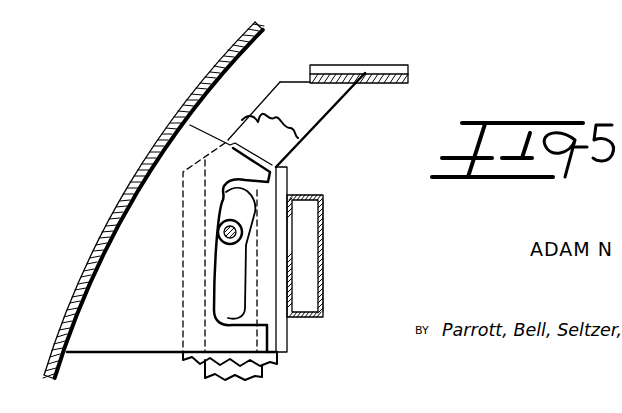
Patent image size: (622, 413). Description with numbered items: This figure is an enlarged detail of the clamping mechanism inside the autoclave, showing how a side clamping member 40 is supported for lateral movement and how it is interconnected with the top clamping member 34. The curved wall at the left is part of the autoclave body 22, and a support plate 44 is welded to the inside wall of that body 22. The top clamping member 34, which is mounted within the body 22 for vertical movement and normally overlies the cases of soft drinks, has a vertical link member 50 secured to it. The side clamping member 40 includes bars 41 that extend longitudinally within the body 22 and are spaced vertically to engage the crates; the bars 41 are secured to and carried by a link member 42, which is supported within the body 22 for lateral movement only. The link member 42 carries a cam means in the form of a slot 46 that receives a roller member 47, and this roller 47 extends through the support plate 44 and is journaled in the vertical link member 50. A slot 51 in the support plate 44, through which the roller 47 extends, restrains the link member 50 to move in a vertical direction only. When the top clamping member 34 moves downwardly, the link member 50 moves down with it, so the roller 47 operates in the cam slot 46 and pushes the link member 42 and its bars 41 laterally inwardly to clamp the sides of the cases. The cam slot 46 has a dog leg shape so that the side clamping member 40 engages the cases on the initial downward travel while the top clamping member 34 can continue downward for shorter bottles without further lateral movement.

The autoclave body 22 is at (160, 142).
The top clamping member 34 is at (372, 70).
The side clamping member 40 is at (328, 211).
The bar 41 is at (323, 250).
The link member 42 is at (267, 307).
The support plate 44 is at (88, 287).
The cam slot 46 is at (220, 292).
The roller member 47 is at (220, 218).
The vertical link member 50 is at (280, 82).
The slot 51 is at (210, 153).